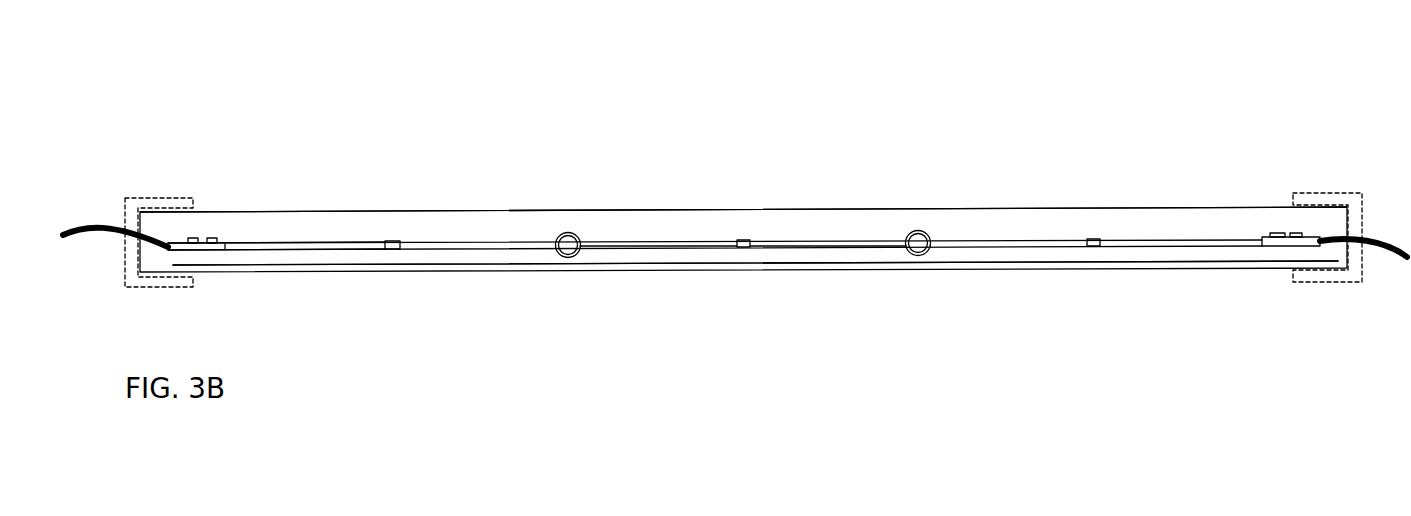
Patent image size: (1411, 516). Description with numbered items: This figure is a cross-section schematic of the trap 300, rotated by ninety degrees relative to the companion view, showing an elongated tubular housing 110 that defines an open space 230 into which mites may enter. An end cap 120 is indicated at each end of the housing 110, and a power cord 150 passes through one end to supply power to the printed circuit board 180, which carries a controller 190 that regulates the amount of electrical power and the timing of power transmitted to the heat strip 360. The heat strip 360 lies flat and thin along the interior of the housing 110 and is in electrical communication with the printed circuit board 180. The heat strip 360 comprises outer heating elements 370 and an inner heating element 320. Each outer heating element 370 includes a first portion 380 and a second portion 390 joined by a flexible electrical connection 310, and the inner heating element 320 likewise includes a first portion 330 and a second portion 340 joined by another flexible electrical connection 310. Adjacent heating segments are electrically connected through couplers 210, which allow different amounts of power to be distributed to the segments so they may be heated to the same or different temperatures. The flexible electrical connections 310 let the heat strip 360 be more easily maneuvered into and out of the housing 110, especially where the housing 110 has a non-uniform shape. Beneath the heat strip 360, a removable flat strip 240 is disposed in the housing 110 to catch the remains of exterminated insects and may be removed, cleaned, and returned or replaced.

The trap 300 is at (1098, 28).
The housing 110 is at (975, 207).
The end cap 120 is at (172, 197).
The power cord 150 is at (88, 233).
The printed circuit board 180 is at (190, 236).
The controller 190 is at (217, 238).
The heat strip 360 is at (315, 242).
The flexible electrical connection 310 is at (393, 238).
The coupler 210 is at (570, 232).
The open space 230 is at (757, 225).
The first portion 380 is at (247, 247).
The outer heating element 370 is at (357, 250).
The second portion 390 is at (462, 252).
The first portion 330 is at (607, 247).
The inner heating element 320 is at (690, 247).
The second portion 340 is at (810, 247).
The removable flat strip 240 is at (1172, 260).